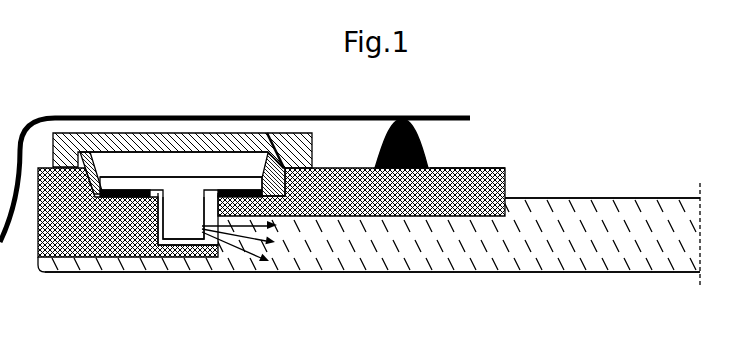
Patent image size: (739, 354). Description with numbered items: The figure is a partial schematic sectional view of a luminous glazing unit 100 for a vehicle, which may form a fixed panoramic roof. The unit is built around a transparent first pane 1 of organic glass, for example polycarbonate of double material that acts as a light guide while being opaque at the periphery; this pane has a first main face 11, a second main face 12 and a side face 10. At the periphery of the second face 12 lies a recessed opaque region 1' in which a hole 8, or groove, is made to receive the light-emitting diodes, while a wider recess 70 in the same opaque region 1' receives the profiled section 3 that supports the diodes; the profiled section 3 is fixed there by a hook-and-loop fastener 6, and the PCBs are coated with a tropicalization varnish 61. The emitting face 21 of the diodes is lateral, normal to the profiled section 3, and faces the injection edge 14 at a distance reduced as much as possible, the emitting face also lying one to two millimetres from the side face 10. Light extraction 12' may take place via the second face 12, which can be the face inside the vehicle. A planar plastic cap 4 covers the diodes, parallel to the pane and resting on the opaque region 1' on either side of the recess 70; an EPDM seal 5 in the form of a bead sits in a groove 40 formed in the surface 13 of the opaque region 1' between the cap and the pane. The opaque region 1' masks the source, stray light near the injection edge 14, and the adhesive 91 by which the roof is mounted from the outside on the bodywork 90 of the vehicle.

The luminous glazing unit 100 is at (550, 93).
The first pane 1 is at (369, 217).
The recessed opaque region 1' is at (304, 219).
The first main face 11 is at (350, 272).
The second main face 12 is at (562, 175).
The light extraction 12' is at (660, 174).
The surface of the opaque region 13 is at (468, 168).
The side face 10 is at (37, 262).
The injection edge 14 is at (208, 232).
The emitting face 21 is at (195, 228).
The tropicalization varnish 61 is at (165, 243).
The profiled section 3 is at (173, 187).
The hole 8 is at (212, 197).
The recess 70 is at (135, 167).
The bodywork 90 is at (117, 130).
The cap 4 is at (88, 150).
The hook-and-loop fastener 6 is at (243, 190).
The EPDM seal 5 is at (290, 131).
The groove 40 is at (53, 116).
The adhesive 91 is at (436, 128).